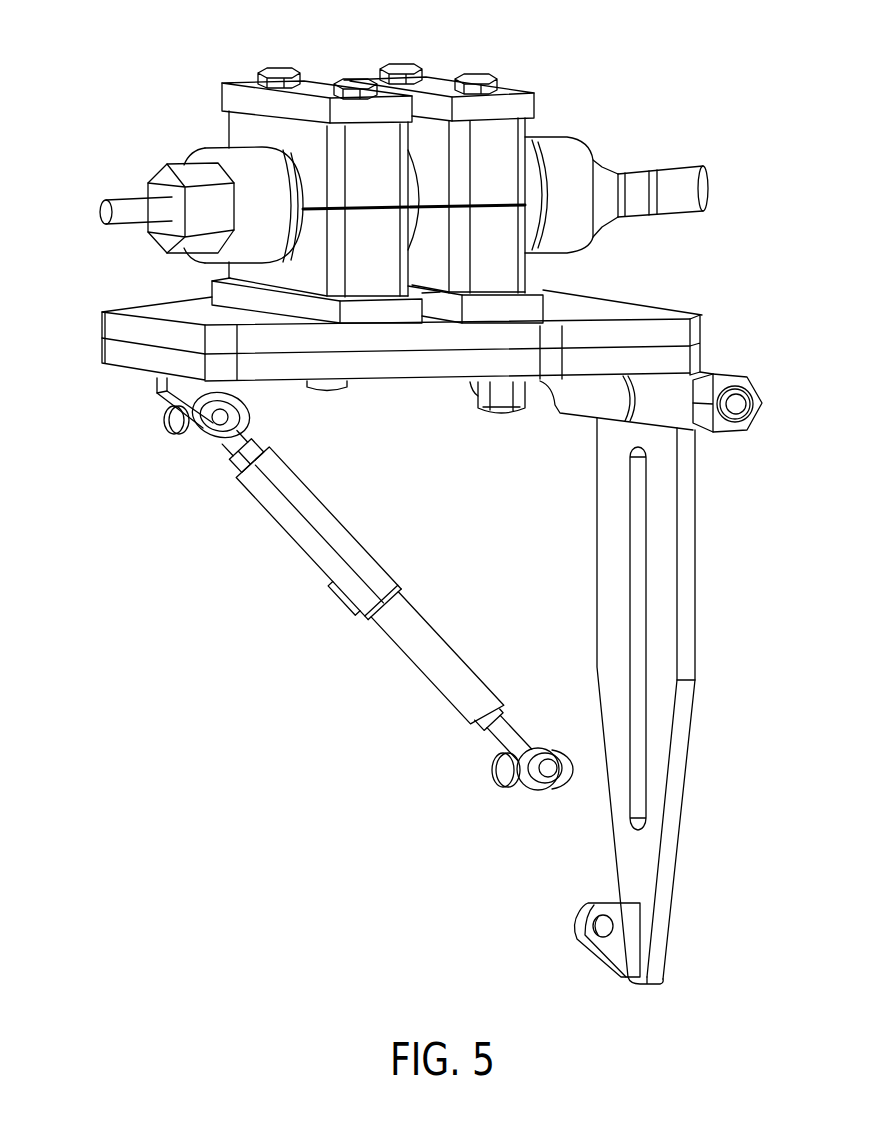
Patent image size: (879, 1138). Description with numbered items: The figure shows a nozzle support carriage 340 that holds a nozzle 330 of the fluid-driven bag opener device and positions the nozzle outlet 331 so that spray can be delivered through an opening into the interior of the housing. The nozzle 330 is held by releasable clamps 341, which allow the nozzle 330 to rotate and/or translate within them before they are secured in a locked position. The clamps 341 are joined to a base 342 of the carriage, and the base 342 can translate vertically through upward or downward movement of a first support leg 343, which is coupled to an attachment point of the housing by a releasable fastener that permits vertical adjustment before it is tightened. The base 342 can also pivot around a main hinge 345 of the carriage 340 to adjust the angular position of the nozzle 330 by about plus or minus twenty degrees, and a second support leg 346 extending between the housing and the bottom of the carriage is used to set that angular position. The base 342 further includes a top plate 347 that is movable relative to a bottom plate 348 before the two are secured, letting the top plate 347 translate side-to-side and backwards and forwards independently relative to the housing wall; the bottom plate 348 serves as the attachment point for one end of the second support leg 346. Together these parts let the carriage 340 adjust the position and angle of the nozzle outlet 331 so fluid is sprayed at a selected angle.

The nozzle support carriage 340 is at (150, 487).
The releasable clamp 341 is at (308, 80).
The nozzle 330 is at (135, 207).
The nozzle outlet 331 is at (706, 186).
The base 342 is at (616, 300).
The first support leg 343 is at (698, 600).
The main hinge 345 is at (724, 372).
The second support leg 346 is at (284, 532).
The top plate 347 is at (152, 300).
The bottom plate 348 is at (383, 382).